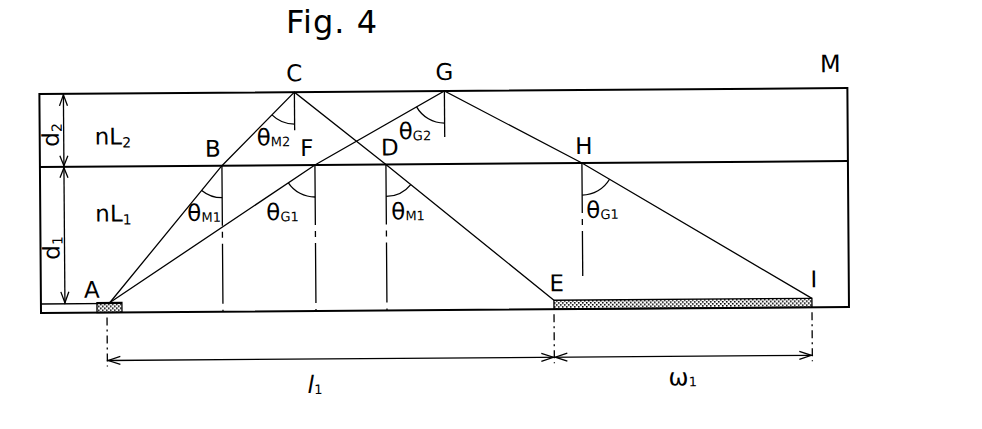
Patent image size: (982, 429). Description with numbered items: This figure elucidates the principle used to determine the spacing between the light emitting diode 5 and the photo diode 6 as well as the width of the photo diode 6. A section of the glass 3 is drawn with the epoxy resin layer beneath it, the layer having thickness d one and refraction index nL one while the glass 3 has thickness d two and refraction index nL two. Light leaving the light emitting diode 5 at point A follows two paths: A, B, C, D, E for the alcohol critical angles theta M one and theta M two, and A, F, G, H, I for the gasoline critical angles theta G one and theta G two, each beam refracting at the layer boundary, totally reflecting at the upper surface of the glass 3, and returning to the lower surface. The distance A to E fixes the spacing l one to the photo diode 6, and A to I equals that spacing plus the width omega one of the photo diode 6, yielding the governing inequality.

The glass 3 is at (776, 100).
The light emitting diode 5 is at (101, 316).
The photo diode 6 is at (705, 311).